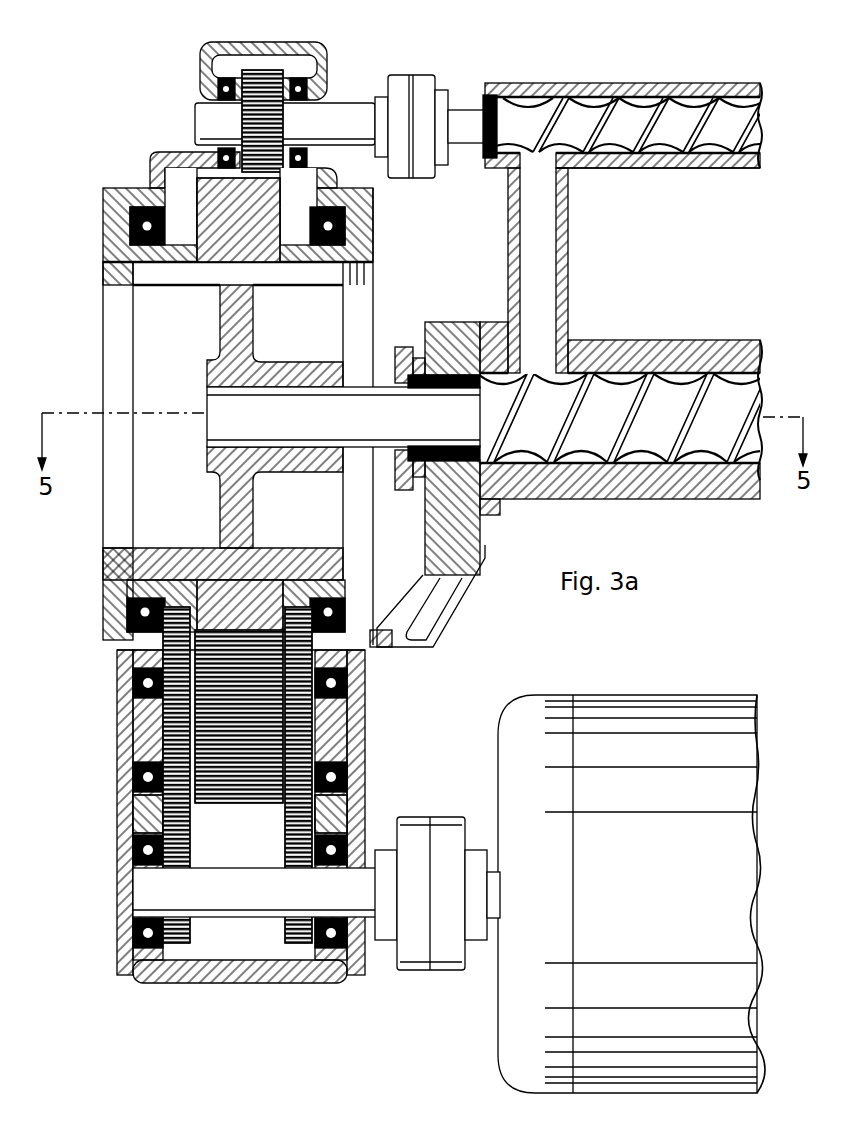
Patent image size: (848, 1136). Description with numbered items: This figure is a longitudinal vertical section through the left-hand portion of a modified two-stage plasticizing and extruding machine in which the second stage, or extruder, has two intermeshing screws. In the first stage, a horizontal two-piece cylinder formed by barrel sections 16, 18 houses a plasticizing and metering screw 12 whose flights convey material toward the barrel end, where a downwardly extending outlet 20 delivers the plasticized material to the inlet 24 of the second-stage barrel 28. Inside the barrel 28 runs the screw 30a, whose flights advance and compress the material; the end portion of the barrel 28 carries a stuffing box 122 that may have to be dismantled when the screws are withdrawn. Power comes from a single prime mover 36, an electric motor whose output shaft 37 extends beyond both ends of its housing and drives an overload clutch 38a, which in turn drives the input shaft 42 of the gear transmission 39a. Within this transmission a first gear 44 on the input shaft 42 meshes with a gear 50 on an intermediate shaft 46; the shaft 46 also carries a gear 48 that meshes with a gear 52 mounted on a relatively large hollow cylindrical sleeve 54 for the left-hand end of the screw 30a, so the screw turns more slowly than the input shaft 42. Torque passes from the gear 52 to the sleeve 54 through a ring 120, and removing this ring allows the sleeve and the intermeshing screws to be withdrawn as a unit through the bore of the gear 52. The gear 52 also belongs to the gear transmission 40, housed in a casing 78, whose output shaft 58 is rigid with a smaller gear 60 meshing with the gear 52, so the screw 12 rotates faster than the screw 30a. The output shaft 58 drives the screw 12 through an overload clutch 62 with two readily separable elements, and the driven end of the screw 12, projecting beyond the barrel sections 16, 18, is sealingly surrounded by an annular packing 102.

The plasticizing and metering screw 12 is at (677, 115).
The barrel section 16 is at (689, 158).
The barrel section 18 is at (620, 90).
The outlet 20 is at (547, 160).
The inlet 24 is at (543, 367).
The barrel 28 is at (685, 348).
The screw 30a is at (647, 427).
The prime mover 36 is at (652, 718).
The output shaft 37 is at (497, 923).
The overload clutch 38a is at (443, 832).
The gear transmission 39a is at (378, 702).
The gear transmission 40 is at (187, 147).
The input shaft 42 is at (237, 900).
The first gear 44 is at (178, 943).
The intermediate shaft 46 is at (332, 722).
The gear 48 is at (240, 770).
The gear 50 is at (155, 715).
The gear 52 is at (213, 190).
The sleeve 54 is at (178, 278).
The output shaft 58 is at (200, 115).
The gear 60 is at (259, 72).
The overload clutch 62 is at (420, 87).
The casing 78 is at (137, 808).
The annular packing 102 is at (481, 93).
The ring 120 is at (110, 255).
The stuffing box 122 is at (425, 350).